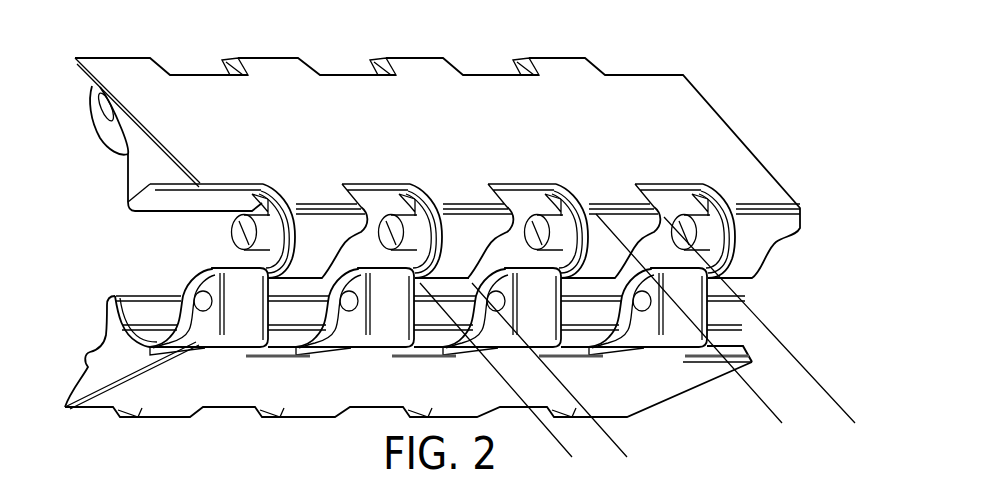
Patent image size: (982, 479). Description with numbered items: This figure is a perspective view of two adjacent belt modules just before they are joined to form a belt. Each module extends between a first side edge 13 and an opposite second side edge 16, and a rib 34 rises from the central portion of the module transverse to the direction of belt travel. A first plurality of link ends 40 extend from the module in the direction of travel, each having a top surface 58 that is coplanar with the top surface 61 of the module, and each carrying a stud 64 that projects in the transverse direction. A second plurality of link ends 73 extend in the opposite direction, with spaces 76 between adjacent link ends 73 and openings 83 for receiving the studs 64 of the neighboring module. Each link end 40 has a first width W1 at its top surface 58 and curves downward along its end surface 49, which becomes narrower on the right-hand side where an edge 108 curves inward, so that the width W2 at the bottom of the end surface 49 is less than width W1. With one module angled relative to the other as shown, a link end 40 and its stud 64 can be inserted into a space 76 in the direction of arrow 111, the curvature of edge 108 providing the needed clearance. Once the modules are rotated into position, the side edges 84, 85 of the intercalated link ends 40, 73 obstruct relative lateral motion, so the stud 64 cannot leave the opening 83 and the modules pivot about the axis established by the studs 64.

The first side edge 13 is at (137, 140).
The second side edge 16 is at (747, 143).
The rib 34 is at (130, 197).
The first plurality of link ends 40 is at (463, 228).
The end surface 49 is at (617, 233).
The top surface 58 is at (610, 192).
The top surface of the module 61 is at (427, 126).
The stud 64 is at (418, 214).
The second plurality of link ends 73 is at (120, 58).
The spaces 76 is at (371, 62).
The openings 83 is at (198, 306).
The side edge of link end 84 is at (468, 356).
The side edge of link end 85 is at (505, 198).
The edge 108 is at (344, 184).
The arrow 111 is at (306, 297).
The first width W1 is at (840, 407).
The second width W2 is at (555, 438).